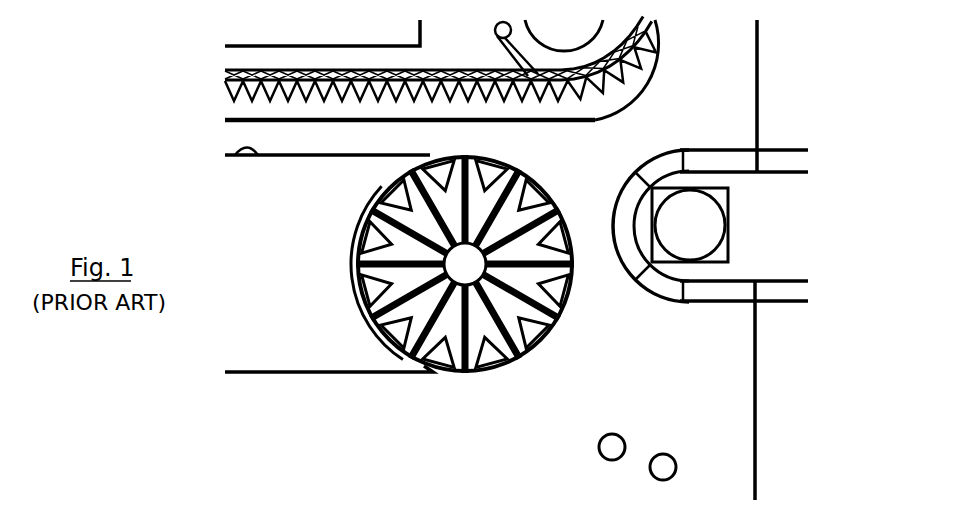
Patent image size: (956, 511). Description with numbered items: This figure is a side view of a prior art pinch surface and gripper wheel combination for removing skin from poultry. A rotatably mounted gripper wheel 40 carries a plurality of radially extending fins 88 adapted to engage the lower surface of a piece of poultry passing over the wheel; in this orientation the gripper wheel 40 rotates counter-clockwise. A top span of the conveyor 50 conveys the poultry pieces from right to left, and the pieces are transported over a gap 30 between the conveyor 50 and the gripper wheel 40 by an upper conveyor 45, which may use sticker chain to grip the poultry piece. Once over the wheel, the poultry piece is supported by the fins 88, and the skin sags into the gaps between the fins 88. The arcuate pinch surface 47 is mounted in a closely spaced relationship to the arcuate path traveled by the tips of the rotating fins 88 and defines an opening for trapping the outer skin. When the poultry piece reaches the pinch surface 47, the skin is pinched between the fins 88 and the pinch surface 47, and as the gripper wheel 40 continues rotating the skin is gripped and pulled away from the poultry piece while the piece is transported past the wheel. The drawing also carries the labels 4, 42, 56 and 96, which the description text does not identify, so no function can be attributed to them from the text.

The frame plate 4 is at (330, 373).
The gap 30 is at (606, 249).
The gripper wheel 40 is at (482, 156).
The wheel rim 42 is at (540, 335).
The upper conveyor 45 is at (622, 85).
The arcuate pinch surface 47 is at (386, 172).
The conveyor 50 is at (785, 150).
The hub 56 is at (418, 370).
The radially extending fins 88 is at (512, 178).
The pawl 96 is at (362, 226).